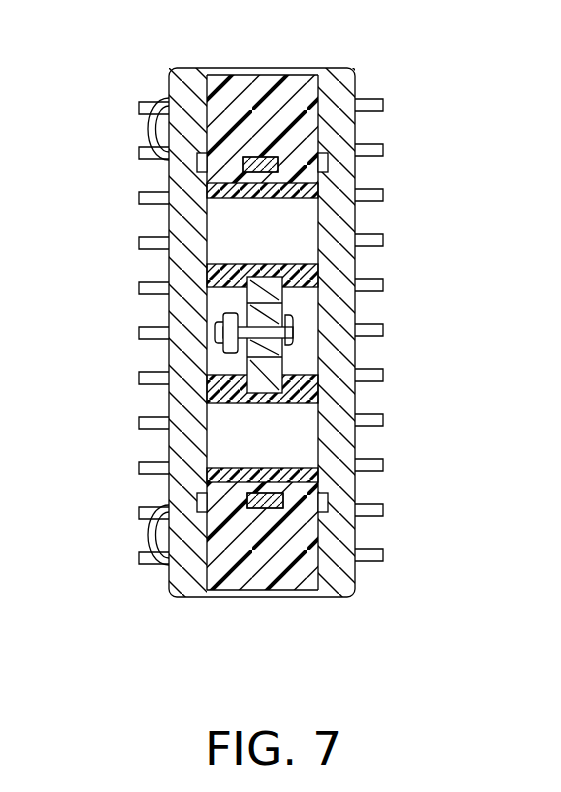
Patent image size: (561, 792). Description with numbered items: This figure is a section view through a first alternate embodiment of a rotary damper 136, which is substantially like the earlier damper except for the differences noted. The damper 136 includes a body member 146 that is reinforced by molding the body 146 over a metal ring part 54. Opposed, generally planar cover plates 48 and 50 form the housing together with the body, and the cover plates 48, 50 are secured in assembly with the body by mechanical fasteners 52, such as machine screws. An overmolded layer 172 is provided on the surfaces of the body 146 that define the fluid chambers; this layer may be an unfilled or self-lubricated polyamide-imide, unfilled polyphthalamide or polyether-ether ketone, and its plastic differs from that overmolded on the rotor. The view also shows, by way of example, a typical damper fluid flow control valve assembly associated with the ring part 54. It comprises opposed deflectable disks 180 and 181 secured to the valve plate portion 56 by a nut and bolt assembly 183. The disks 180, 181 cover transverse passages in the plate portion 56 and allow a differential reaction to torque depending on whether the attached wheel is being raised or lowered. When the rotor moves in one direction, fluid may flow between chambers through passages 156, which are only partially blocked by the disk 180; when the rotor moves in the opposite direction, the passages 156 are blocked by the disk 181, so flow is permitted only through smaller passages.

The rotary damper 136 is at (230, 58).
The cover plate 48 is at (356, 214).
The cover plate 50 is at (169, 213).
The mechanical fastener 52 is at (150, 128).
The metal ring part 54 is at (273, 157).
The valve plate portion 56 is at (290, 263).
The passage 156 is at (258, 385).
The deflectable disk 180 is at (247, 300).
The deflectable disk 181 is at (293, 322).
The nut and bolt assembly 183 is at (293, 340).
The overmolded layer 172 is at (287, 488).
The body member 146 is at (288, 582).